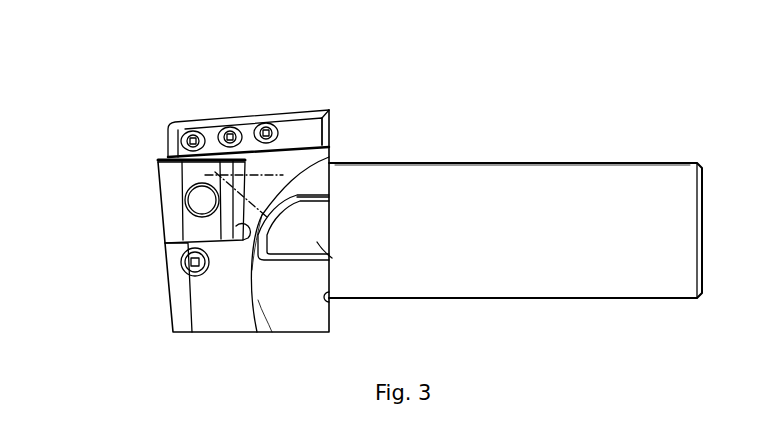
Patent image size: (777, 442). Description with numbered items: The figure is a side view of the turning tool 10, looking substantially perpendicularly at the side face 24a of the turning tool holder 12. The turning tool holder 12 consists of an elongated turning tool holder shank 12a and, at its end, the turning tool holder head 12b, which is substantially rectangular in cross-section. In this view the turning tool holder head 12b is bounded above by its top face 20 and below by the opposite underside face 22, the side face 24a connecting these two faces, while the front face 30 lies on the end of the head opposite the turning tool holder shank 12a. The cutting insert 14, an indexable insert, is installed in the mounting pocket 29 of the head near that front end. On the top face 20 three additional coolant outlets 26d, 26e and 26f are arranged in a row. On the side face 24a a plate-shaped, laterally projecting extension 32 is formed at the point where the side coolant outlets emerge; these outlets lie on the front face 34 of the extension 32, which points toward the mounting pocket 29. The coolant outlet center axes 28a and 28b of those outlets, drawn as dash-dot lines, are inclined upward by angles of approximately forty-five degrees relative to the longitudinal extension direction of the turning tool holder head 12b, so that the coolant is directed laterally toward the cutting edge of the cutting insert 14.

The turning tool 10 is at (533, 137).
The turning tool holder 12 is at (630, 283).
The turning tool holder shank 12a is at (625, 176).
The turning tool holder head 12b is at (277, 112).
The cutting insert 14 is at (172, 214).
The top face 20 is at (197, 110).
The underside face 22 is at (202, 333).
The side face 24a is at (272, 322).
The additional coolant outlet 26d is at (182, 132).
The additional coolant outlet 26e is at (228, 127).
The additional coolant outlet 26f is at (266, 123).
The coolant outlet center axis 28a is at (329, 158).
The coolant outlet center axis 28b is at (252, 300).
The mounting pocket 29 is at (166, 244).
The front face 30 is at (142, 160).
The extension 32 is at (320, 244).
The front face of the extension 34 is at (308, 210).